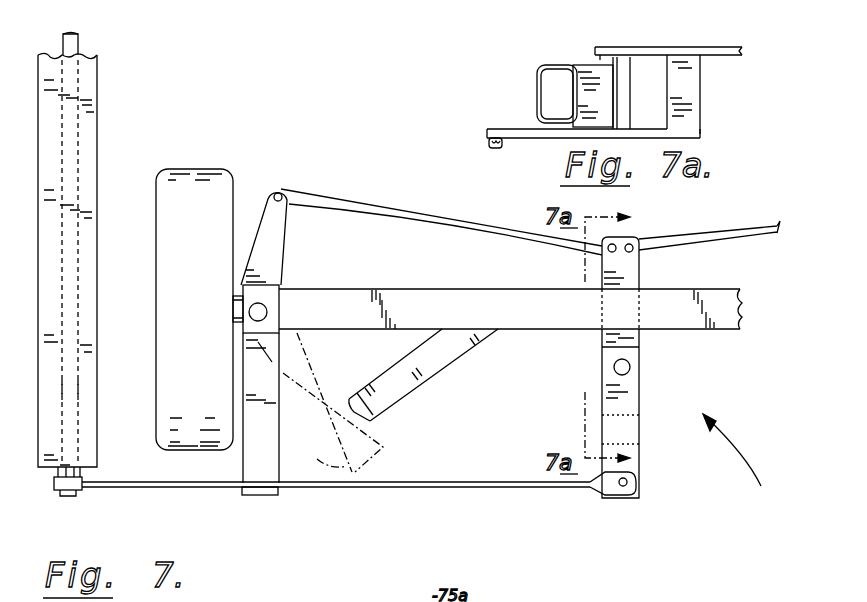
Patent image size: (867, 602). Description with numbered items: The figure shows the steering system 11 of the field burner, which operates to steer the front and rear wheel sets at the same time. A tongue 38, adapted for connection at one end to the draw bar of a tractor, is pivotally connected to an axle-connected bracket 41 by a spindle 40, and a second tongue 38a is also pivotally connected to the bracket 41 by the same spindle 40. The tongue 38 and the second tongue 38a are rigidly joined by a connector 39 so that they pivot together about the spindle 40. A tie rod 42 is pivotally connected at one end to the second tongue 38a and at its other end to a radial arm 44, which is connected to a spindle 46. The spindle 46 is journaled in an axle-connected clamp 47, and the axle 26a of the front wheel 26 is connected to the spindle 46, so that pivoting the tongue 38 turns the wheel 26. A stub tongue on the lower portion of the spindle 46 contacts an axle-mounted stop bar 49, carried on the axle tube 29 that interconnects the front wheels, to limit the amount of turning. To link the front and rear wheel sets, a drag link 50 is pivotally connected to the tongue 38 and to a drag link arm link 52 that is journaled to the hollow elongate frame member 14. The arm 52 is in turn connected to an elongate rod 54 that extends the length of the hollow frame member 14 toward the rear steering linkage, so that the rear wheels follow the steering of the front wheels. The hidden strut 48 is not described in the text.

In FIG. 7, the steering system 11 is at (744, 458).
In FIG. 7, the elongate frame member 14 is at (97, 373).
In FIG. 7, the front wheel 26 is at (160, 428).
In FIG. 7, the axle 26a is at (233, 310).
In FIG. 7, the axle tube 29 is at (452, 291).
In FIG. 7A, the axle tube 29 is at (540, 72).
In FIG. 7, the tongue 38 is at (638, 467).
In FIG. 7A, the tongue 38 is at (727, 57).
In FIG. 7A, the second tongue 38a is at (519, 129).
In FIG. 7, the connector 39 is at (622, 415).
In FIG. 7A, the connector 39 is at (690, 108).
In FIG. 7, the spindle 40 is at (631, 367).
In FIG. 7A, the spindle 40 is at (622, 97).
In FIG. 7, the axle-connected bracket 41 is at (630, 347).
In FIG. 7A, the axle-connected bracket 41 is at (587, 72).
In FIG. 7, the tie rod 42 is at (432, 222).
In FIG. 7A, the tie rod 42 is at (489, 143).
In FIG. 7, the radial arm 44 is at (280, 240).
In FIG. 7, the spindle 46 is at (268, 313).
In FIG. 7, the axle-connected clamp 47 is at (268, 293).
In FIG. 7, the hidden strut 48 is at (273, 420).
In FIG. 7, the stop bar 49 is at (440, 372).
In FIG. 7, the drag link 50 is at (470, 487).
In FIG. 7, the drag link arm link 52 is at (57, 489).
In FIG. 7, the elongate rod 54 is at (78, 388).